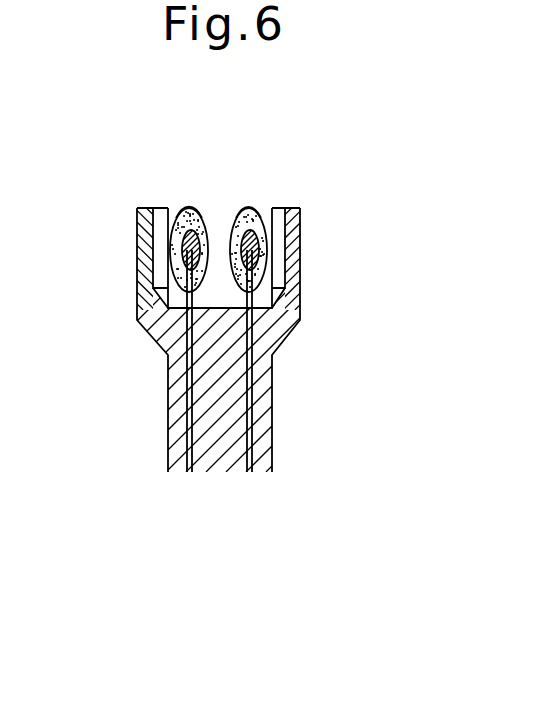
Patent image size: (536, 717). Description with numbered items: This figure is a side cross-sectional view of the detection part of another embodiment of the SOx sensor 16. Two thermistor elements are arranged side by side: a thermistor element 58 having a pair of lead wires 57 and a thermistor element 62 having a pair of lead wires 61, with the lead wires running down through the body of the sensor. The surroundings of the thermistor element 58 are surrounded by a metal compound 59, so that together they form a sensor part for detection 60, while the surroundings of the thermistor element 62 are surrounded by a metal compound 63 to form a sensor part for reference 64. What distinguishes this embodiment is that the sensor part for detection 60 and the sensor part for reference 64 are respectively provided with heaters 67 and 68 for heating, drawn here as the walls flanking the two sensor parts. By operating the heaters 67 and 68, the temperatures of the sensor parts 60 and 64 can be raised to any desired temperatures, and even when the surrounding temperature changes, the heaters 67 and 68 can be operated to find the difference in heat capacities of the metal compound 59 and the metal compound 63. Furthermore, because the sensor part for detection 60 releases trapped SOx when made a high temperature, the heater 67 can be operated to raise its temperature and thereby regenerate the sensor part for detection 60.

The SOx sensor 16 is at (158, 439).
The lead wires 57 is at (130, 393).
The thermistor element 58 is at (182, 242).
The metal compound 59 is at (188, 208).
The sensor part for detection 60 is at (205, 197).
The lead wires 61 is at (313, 392).
The thermistor element 62 is at (259, 242).
The metal compound 63 is at (258, 208).
The sensor part for reference 64 is at (246, 196).
The heater 67 is at (141, 263).
The heater 68 is at (297, 263).